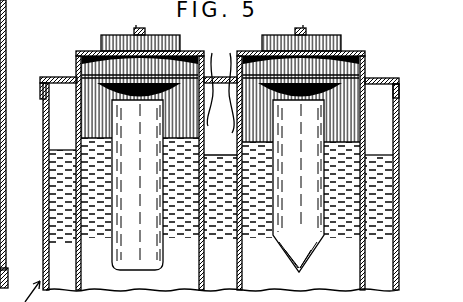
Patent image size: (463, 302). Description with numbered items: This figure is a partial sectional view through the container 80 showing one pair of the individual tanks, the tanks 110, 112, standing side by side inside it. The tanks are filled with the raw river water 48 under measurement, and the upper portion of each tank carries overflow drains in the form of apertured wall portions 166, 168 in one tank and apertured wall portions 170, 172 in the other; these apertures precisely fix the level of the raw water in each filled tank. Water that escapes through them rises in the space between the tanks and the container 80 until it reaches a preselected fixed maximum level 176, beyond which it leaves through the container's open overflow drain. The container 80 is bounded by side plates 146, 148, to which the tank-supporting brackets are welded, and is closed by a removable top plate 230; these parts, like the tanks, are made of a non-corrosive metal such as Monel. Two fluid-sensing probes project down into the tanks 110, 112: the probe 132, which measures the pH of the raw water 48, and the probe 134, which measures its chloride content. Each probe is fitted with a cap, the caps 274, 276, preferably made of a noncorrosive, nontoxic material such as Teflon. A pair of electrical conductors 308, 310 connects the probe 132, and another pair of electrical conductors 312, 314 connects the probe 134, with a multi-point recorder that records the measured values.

The raw river water 48 is at (65, 190).
The container 80 is at (13, 15).
The tank 110 is at (301, 173).
The tank 112 is at (82, 253).
The fluid-sensing probe 132 is at (140, 248).
The fluid-sensing probe 134 is at (313, 191).
The side plate 146 is at (43, 248).
The side plate 148 is at (316, 248).
The apertured wall portion 166 is at (371, 112).
The apertured wall portion 168 is at (240, 84).
The apertured wall portion 170 is at (199, 81).
The apertured wall portion 172 is at (75, 130).
The preselected fixed maximum level 176 is at (380, 148).
The removable top plate 230 is at (62, 78).
The cap 274 is at (88, 54).
The cap 276 is at (310, 38).
The electrical conductor 308 is at (146, 28).
The electrical conductor 310 is at (134, 28).
The electrical conductor 312 is at (275, 25).
The electrical conductor 314 is at (329, 16).